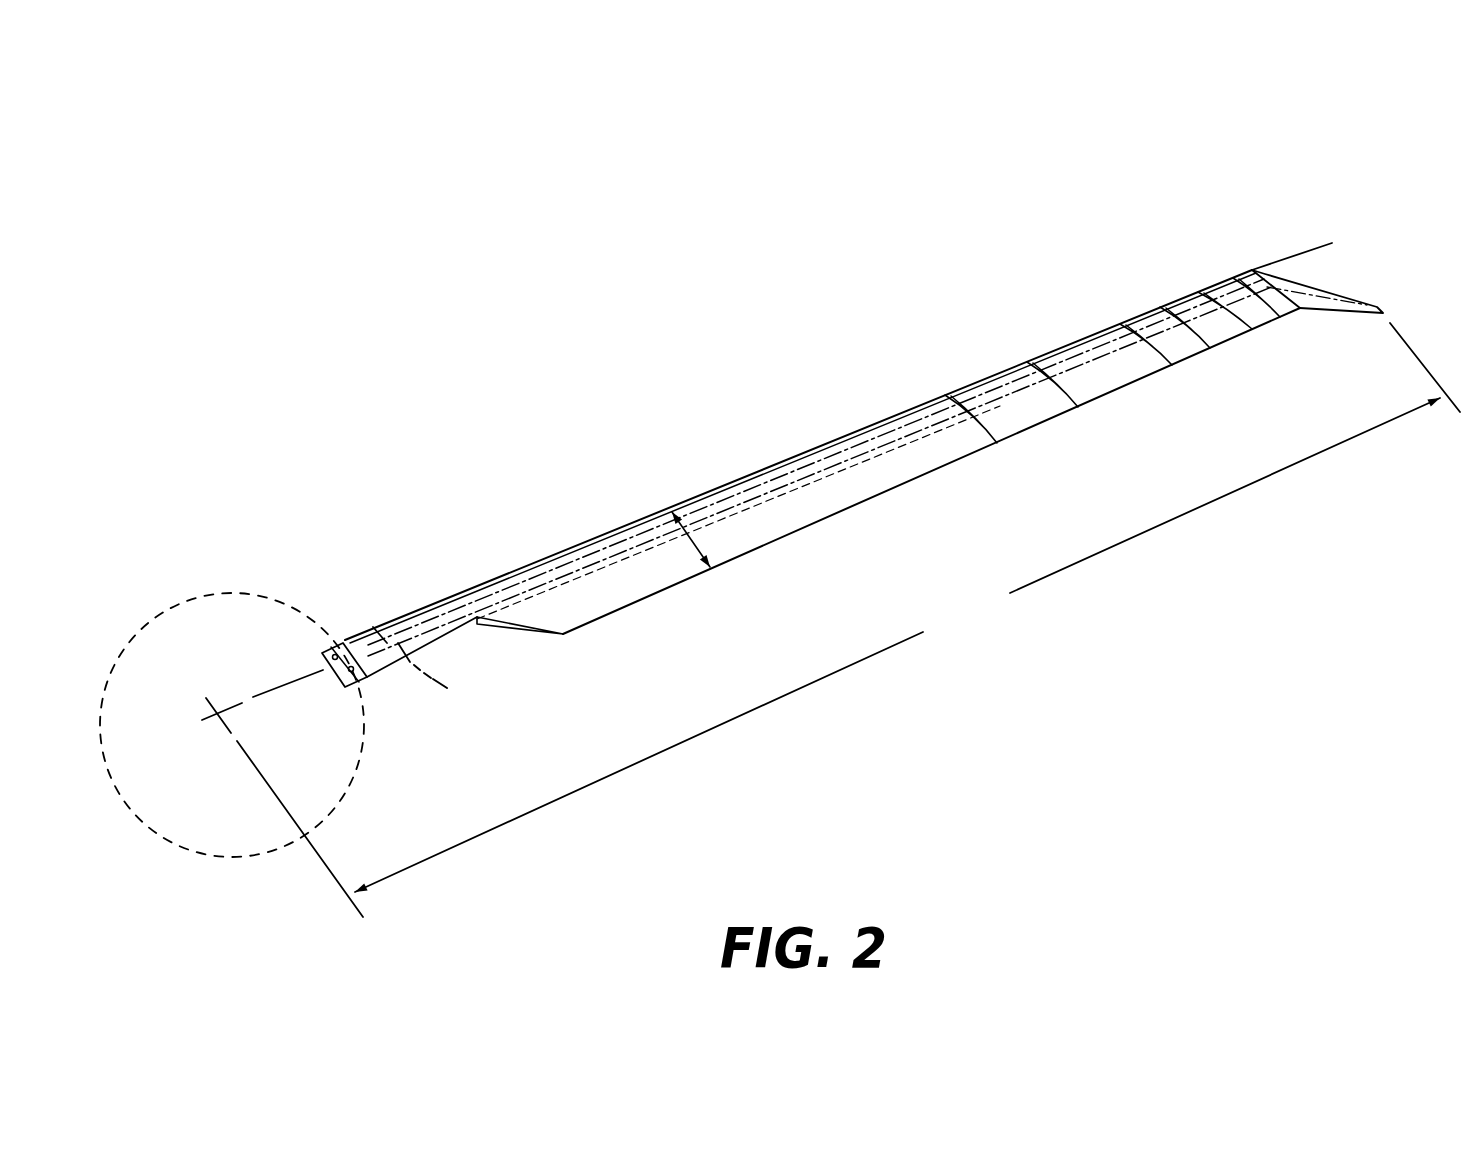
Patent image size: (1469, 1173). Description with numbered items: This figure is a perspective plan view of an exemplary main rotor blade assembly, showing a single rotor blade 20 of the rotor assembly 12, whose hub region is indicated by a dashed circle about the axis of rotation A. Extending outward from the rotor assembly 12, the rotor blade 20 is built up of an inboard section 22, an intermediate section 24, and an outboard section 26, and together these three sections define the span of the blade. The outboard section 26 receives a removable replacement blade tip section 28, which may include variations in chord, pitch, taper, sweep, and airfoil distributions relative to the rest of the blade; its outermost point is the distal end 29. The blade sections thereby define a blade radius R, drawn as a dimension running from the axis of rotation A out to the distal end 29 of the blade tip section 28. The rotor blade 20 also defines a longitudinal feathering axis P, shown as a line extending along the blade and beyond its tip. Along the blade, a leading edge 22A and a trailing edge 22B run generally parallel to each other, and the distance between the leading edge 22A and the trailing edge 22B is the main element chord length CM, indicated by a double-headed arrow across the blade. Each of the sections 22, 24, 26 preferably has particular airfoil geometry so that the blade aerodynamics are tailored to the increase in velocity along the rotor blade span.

The rotor assembly 12 is at (290, 605).
The rotor blade 20 is at (983, 243).
The inboard section 22 is at (735, 468).
The leading edge 22A is at (637, 522).
The trailing edge 22B is at (672, 588).
The intermediate section 24 is at (977, 366).
The outboard section 26 is at (1063, 330).
The replacement blade tip section 28 is at (1200, 275).
The distal end 29 is at (1382, 308).
The axis of rotation A is at (216, 716).
The longitudinal feathering axis P is at (1293, 258).
The main element chord length CM is at (697, 532).
The blade radius R is at (848, 620).